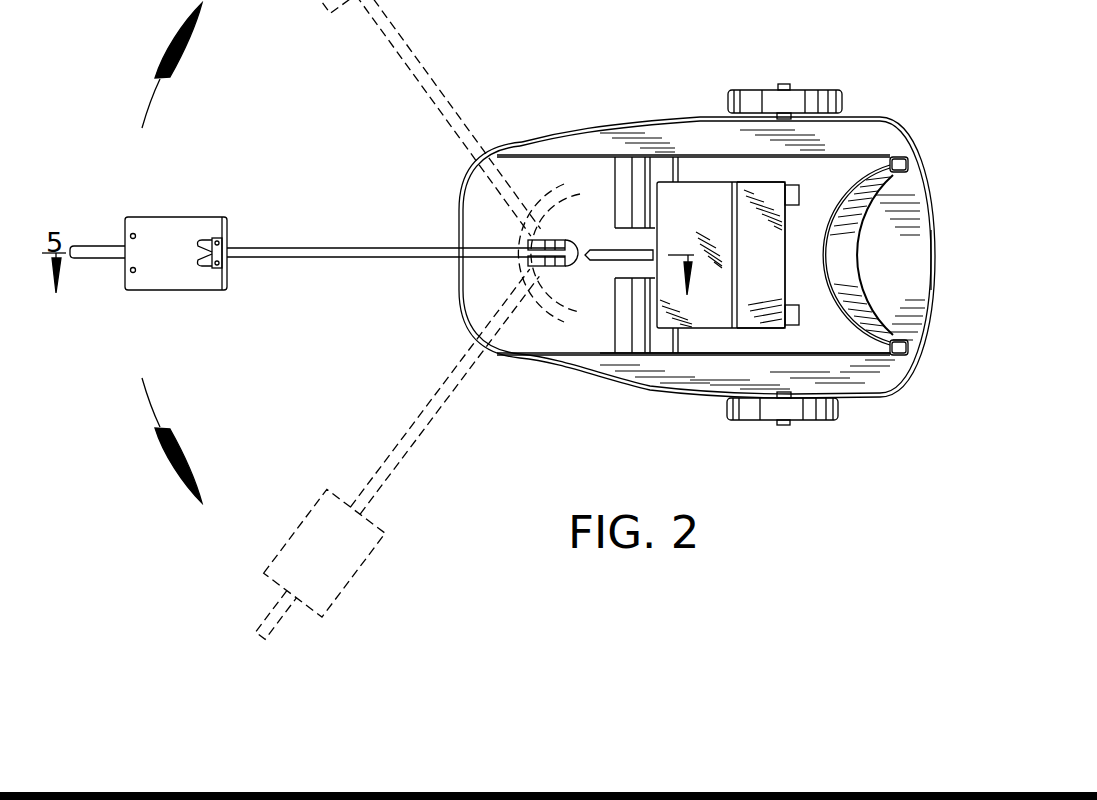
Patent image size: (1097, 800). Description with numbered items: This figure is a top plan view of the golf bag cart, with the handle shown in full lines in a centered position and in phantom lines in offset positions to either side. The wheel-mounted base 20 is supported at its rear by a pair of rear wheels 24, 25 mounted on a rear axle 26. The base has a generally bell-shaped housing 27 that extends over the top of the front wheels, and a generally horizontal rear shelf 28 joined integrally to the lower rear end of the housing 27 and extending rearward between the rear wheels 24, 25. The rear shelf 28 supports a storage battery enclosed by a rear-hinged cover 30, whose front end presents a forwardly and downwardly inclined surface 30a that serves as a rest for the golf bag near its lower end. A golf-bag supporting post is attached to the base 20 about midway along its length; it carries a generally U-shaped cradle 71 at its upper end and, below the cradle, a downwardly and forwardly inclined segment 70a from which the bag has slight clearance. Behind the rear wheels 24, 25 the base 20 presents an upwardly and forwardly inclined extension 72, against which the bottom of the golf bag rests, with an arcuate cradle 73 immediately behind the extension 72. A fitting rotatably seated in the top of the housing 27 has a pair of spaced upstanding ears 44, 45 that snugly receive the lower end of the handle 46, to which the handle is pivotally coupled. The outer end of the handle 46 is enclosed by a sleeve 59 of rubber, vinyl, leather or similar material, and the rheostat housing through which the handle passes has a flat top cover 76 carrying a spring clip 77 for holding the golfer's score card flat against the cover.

The wheel-mounted base 20 is at (689, 249).
The rear wheel 24 is at (808, 412).
The rear wheel 25 is at (832, 90).
The rear axle 26 is at (786, 90).
The housing 27 is at (470, 200).
The rear shelf 28 is at (730, 351).
The cover 30 is at (704, 212).
The inclined surface 30a is at (783, 267).
The ear 44 is at (527, 263).
The ear 45 is at (555, 242).
The handle 46 is at (432, 78).
The sleeve 59 is at (85, 259).
The inclined segment 70a is at (602, 262).
The cradle 71 is at (517, 225).
The extension 72 is at (918, 298).
The arcuate cradle 73 is at (838, 258).
The top cover 76 is at (163, 225).
The spring clip 77 is at (198, 242).